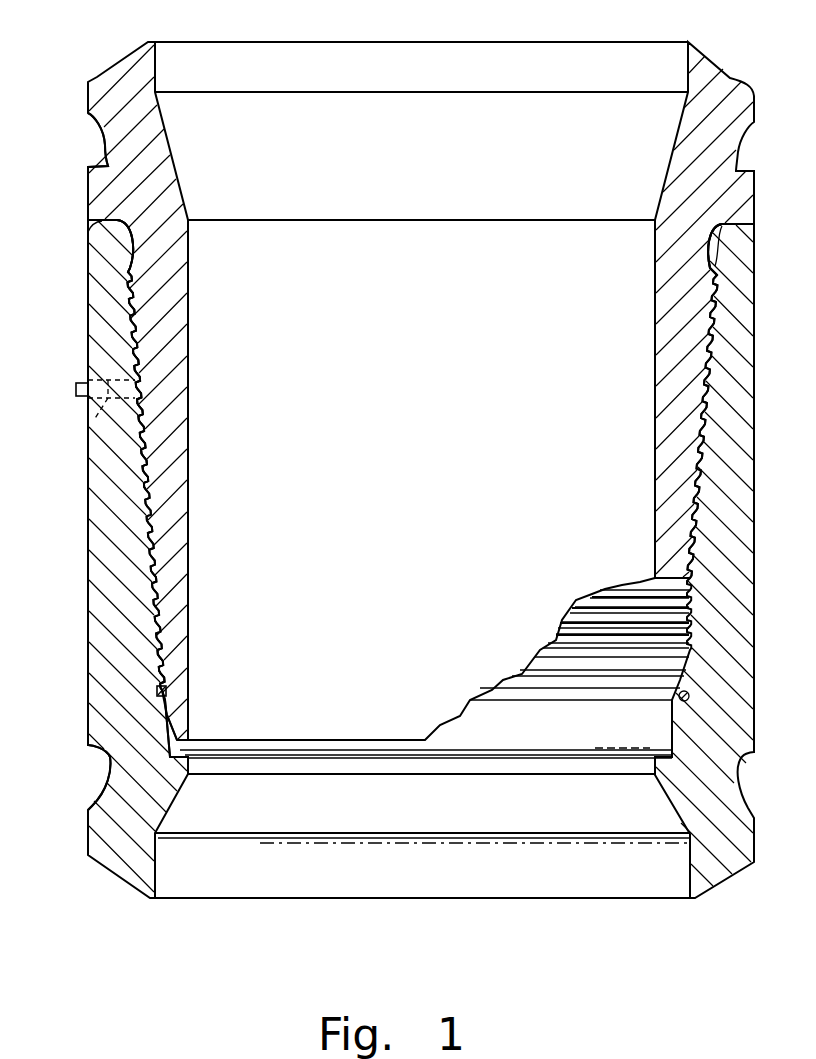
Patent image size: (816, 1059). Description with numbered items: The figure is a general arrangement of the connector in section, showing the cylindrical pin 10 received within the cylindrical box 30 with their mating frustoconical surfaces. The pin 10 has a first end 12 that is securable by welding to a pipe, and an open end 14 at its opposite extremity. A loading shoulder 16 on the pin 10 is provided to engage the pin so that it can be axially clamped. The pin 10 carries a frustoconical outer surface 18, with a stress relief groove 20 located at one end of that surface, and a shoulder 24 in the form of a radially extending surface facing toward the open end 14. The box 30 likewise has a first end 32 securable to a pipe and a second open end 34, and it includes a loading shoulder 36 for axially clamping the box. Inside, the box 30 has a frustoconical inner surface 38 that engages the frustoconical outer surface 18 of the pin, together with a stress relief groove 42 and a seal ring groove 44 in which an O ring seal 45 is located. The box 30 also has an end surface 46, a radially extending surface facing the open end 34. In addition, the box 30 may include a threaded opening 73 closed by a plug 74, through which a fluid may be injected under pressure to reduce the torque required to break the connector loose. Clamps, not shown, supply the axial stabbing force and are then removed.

The cylindrical pin 10 is at (177, 387).
The first end 12 is at (153, 71).
The open end 14 is at (183, 728).
The loading shoulder 16 is at (93, 162).
The frustoconical outer surface 18 is at (141, 442).
The stress relief groove 20 is at (136, 248).
The shoulder 24 is at (92, 237).
The cylindrical box 30 is at (104, 493).
The first end 32 is at (135, 864).
The second open end 34 is at (100, 284).
The loading shoulder 36 is at (93, 762).
The frustoconical inner surface 38 is at (141, 471).
The stress relief groove 42 is at (156, 650).
The seal ring groove 44 is at (167, 712).
The O ring seal 45 is at (167, 688).
The end surface 46 is at (103, 203).
The threaded opening 73 is at (86, 420).
The plug 74 is at (88, 376).